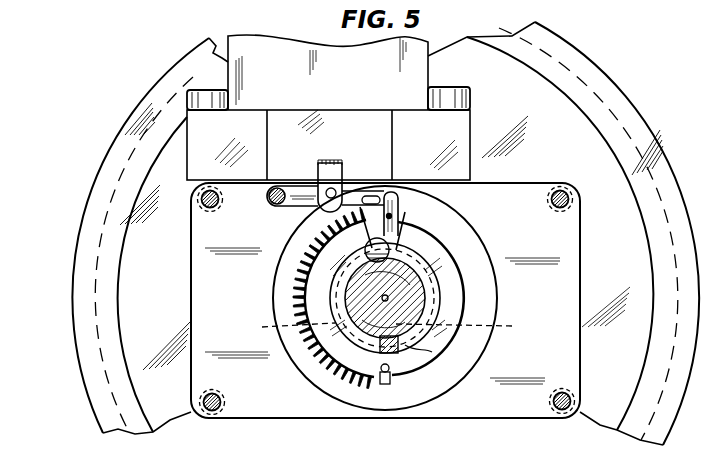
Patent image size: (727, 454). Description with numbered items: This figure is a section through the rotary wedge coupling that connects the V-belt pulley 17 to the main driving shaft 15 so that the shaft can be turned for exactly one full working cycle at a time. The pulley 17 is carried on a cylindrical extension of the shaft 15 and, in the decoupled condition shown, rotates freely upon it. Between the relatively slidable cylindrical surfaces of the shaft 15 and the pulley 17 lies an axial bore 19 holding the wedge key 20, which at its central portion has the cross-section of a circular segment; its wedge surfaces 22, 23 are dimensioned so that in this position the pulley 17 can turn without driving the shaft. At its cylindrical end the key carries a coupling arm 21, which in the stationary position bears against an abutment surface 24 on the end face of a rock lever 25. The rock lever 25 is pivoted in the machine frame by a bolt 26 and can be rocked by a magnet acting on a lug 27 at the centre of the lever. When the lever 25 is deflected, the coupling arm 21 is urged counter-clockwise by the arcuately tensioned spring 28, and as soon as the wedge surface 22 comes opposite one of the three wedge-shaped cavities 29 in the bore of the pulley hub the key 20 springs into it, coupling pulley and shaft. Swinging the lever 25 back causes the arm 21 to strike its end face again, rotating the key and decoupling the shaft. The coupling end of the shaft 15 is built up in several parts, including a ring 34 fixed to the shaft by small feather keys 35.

The main driving shaft 15 is at (400, 296).
The V-belt pulley 17 is at (640, 158).
The axial bore 19 is at (402, 224).
The wedge key 20 is at (421, 240).
The coupling arm 21 is at (401, 216).
The wedge surface 22 is at (471, 249).
The wedge surface 23 is at (330, 247).
The abutment surface 24 is at (398, 198).
The rock lever 25 is at (300, 190).
The bolt 26 is at (270, 202).
The lug 27 is at (347, 170).
The arcuately tensioned spring 28 is at (302, 272).
The wedge-shaped cavities 29 is at (388, 327).
The ring 34 is at (432, 352).
The feather keys 35 is at (392, 353).